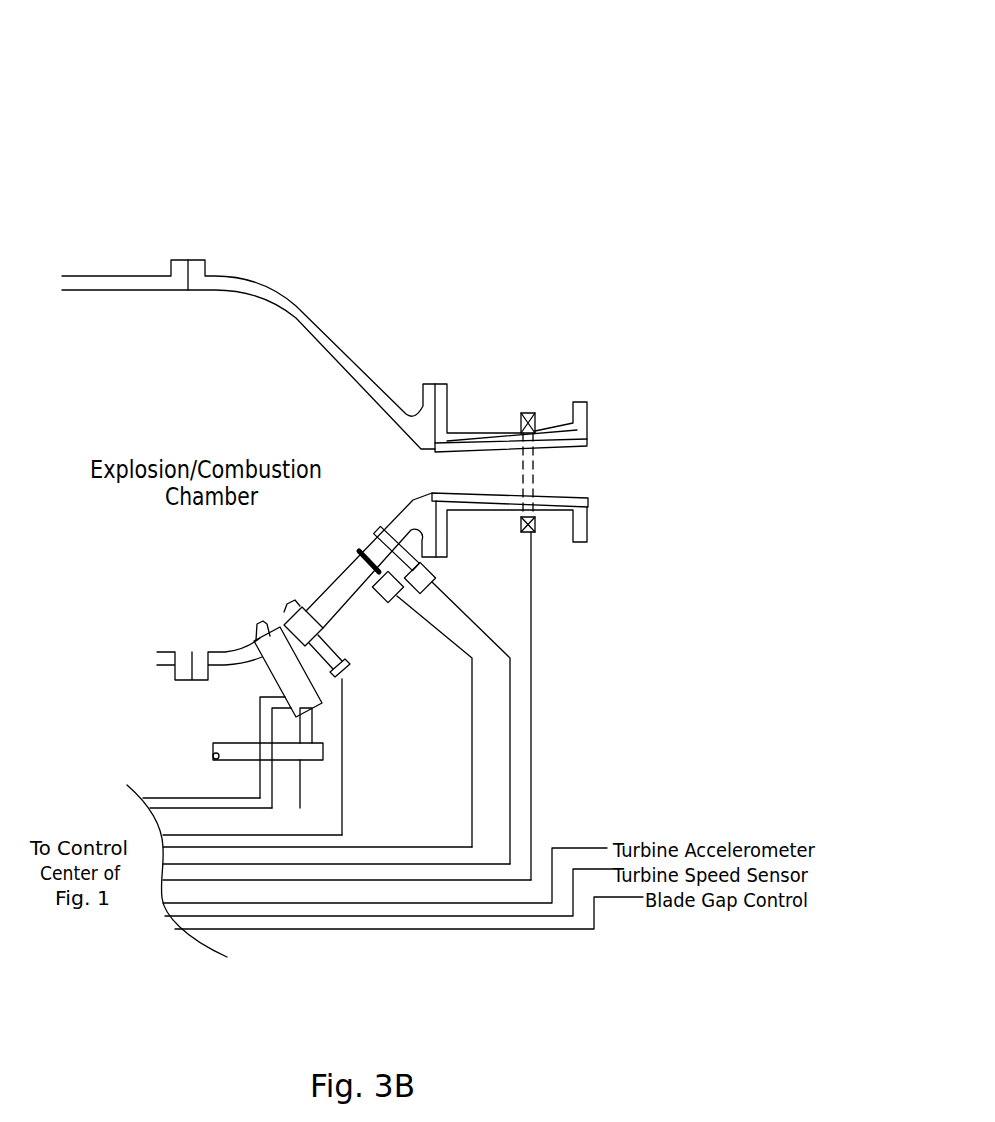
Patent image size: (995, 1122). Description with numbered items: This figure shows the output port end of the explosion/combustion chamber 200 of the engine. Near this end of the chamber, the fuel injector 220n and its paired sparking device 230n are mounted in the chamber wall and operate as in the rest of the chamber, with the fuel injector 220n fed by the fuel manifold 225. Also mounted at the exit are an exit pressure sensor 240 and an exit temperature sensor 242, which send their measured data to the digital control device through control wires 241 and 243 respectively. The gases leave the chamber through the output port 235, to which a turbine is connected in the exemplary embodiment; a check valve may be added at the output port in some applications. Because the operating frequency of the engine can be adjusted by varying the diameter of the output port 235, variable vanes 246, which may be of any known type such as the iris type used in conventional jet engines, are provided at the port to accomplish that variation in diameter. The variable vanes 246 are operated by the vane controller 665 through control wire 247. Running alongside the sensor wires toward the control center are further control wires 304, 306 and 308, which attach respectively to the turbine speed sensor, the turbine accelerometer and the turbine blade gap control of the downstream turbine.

The explosion/combustion chamber 200 is at (633, 57).
The output port 235 is at (470, 438).
The variable vanes 246 is at (571, 443).
The vane controller 665 is at (531, 413).
The fuel injector 220n is at (297, 703).
The fuel manifold 225 is at (212, 747).
The sparking device 230n is at (340, 680).
The exit pressure sensor 240 is at (444, 580).
The exit temperature sensor 242 is at (404, 597).
The control wire 241 is at (510, 688).
The control wire 243 is at (474, 722).
The control wire 247 is at (465, 882).
The control wire 306 is at (567, 843).
The control wire 304 is at (587, 870).
The control wire 308 is at (577, 932).